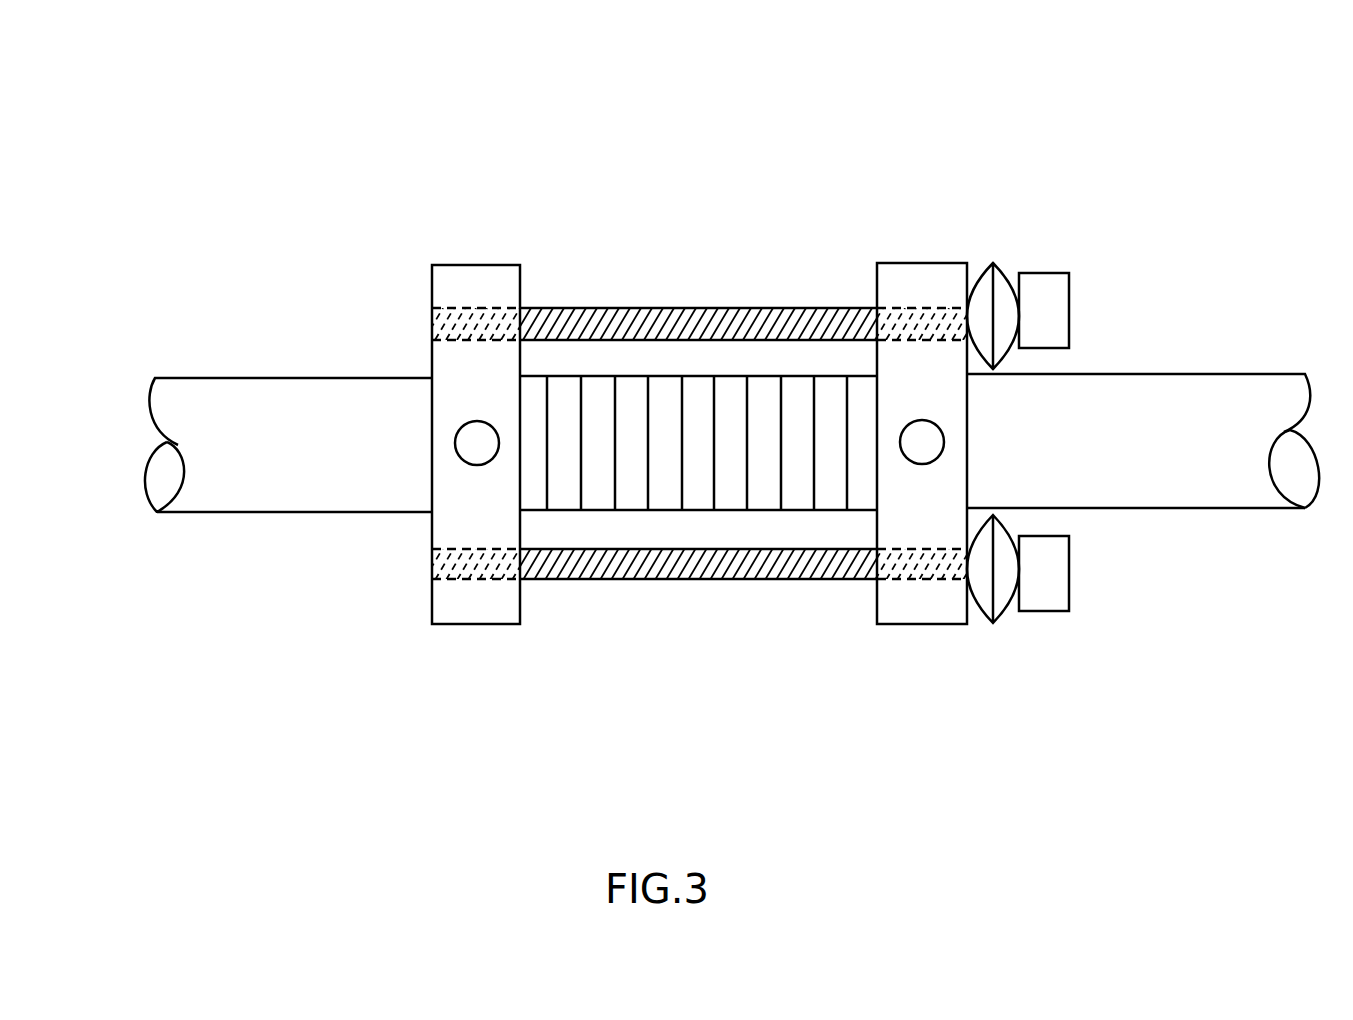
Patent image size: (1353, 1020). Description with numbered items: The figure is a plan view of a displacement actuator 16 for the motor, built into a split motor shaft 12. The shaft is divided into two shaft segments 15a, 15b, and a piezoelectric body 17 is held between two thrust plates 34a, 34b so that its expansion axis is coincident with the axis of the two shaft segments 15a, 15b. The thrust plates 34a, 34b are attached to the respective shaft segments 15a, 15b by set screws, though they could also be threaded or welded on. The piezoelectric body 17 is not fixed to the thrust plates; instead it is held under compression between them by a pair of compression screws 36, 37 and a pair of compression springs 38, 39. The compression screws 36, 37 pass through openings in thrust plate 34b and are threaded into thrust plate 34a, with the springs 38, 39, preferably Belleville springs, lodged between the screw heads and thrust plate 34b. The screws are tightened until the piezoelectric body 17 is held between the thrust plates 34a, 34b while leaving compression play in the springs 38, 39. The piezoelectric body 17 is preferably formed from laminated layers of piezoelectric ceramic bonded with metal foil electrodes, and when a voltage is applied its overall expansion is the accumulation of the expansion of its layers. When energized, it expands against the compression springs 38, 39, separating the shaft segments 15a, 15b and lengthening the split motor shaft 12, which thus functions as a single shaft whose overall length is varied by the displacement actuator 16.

The split motor shaft 12 is at (557, 77).
The shaft segment 15a is at (307, 513).
The shaft segment 15b is at (1232, 508).
The displacement actuator 16 is at (750, 216).
The piezoelectric body 17 is at (681, 466).
The thrust plate 34a is at (477, 624).
The thrust plate 34b is at (920, 624).
The compression screw 36 is at (1069, 578).
The compression screw 37 is at (1069, 318).
The compression spring 38 is at (989, 624).
The compression spring 39 is at (1005, 268).